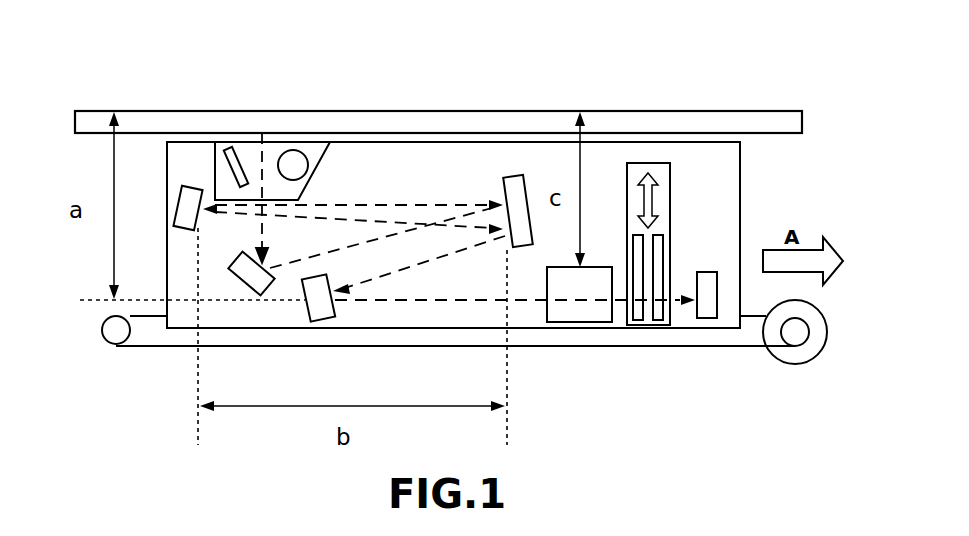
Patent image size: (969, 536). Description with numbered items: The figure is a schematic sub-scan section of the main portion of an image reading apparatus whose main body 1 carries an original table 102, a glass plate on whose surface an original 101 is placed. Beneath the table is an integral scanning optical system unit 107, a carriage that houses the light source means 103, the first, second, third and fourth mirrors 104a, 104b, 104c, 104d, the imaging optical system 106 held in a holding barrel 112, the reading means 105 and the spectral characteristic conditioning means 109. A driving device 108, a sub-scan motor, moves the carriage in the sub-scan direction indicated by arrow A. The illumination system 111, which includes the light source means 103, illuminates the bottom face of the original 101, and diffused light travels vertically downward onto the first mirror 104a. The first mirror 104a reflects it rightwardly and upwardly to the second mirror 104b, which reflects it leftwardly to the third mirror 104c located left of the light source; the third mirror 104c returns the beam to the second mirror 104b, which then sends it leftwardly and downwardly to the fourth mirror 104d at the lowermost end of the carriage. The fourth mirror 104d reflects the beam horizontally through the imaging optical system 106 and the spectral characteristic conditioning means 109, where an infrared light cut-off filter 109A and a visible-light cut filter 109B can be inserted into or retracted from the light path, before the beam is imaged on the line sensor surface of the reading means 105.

The main body of image reading apparatus 1 is at (110, 82).
The original 101 is at (194, 111).
The original table 102 is at (722, 122).
The light source means 103 is at (293, 142).
The first mirror 104a is at (243, 292).
The second mirror 104b is at (513, 175).
The third mirror 104c is at (178, 203).
The fourth mirror 104d is at (325, 322).
The reading means 105 is at (703, 318).
The imaging optical system 106 is at (576, 322).
The integral scanning optical system unit 107 is at (740, 190).
The driving device 108 is at (783, 353).
The spectral characteristic conditioning means 109 is at (651, 191).
The high-polymer multilayered-film filter 109A is at (638, 233).
The high-polymer multilayered-film filter 109B is at (686, 232).
The illumination system 111 is at (223, 142).
The holding barrel 112 is at (550, 326).